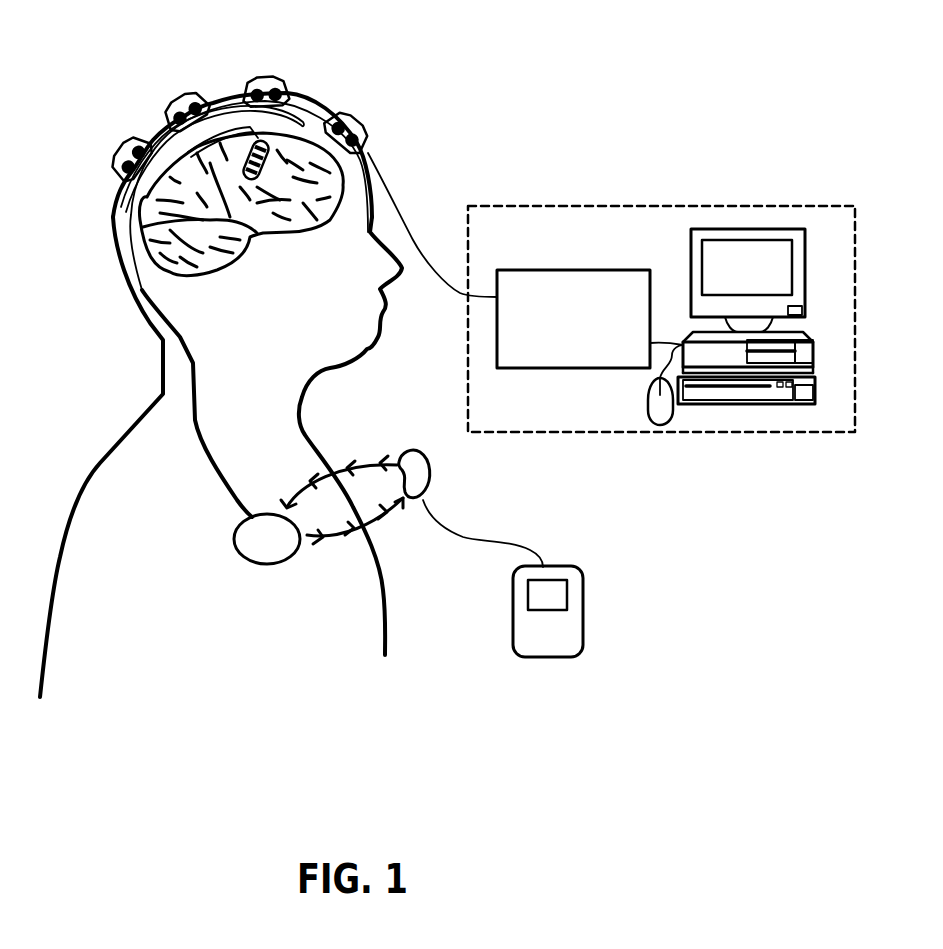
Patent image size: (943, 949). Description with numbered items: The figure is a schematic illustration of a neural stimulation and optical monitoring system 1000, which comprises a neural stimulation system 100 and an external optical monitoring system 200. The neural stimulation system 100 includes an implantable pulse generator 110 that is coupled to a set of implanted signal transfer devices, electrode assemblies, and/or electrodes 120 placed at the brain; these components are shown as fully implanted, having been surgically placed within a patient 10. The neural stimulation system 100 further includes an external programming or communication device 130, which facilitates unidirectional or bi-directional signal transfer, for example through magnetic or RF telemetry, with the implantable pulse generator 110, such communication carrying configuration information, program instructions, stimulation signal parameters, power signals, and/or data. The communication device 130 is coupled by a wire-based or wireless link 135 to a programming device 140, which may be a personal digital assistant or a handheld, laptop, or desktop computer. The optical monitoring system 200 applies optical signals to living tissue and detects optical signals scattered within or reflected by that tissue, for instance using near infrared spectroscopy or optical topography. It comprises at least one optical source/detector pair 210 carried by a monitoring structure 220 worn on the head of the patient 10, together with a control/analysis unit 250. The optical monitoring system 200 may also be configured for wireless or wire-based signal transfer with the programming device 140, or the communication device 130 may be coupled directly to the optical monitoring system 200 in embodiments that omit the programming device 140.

The patient 10 is at (420, 193).
The neural stimulation system 100 is at (150, 355).
The implantable pulse generator 110 is at (280, 548).
The electrodes 120 is at (263, 141).
The external programming or communication device 130 is at (435, 483).
The wire-based or wireless link 135 is at (480, 537).
The programming device 140 is at (585, 597).
The external optical monitoring system 200 is at (498, 70).
The optical source/detector pair 210 is at (352, 133).
The monitoring structure 220 is at (273, 81).
The control/analysis unit 250 is at (680, 186).
The neural stimulation and optical monitoring system 1000 is at (481, 731).